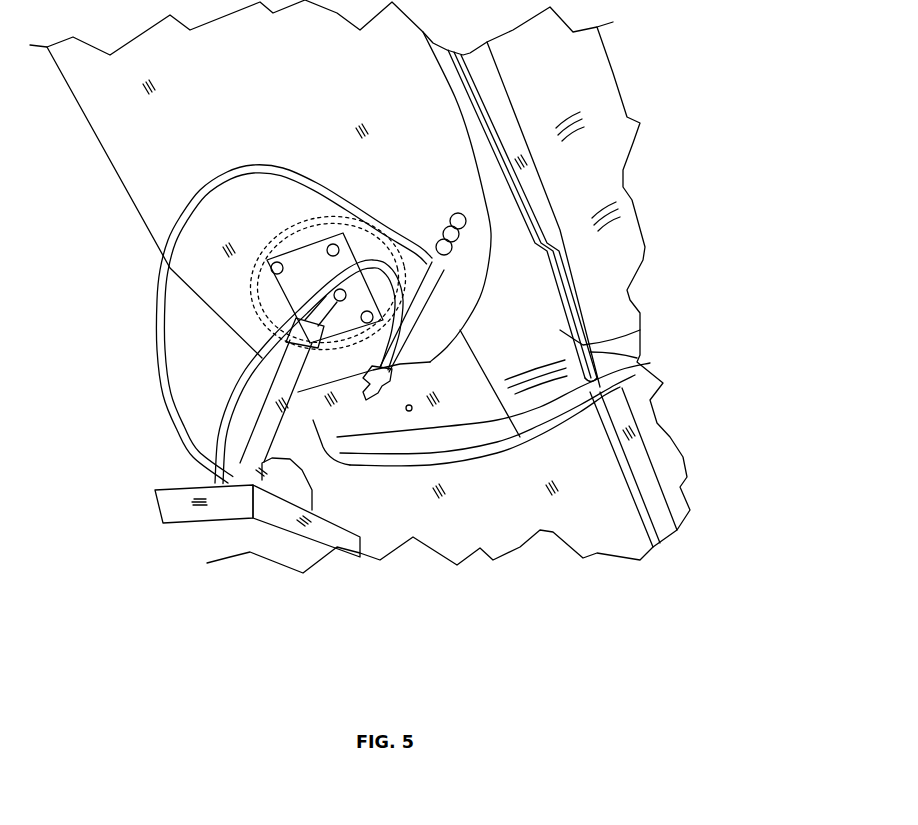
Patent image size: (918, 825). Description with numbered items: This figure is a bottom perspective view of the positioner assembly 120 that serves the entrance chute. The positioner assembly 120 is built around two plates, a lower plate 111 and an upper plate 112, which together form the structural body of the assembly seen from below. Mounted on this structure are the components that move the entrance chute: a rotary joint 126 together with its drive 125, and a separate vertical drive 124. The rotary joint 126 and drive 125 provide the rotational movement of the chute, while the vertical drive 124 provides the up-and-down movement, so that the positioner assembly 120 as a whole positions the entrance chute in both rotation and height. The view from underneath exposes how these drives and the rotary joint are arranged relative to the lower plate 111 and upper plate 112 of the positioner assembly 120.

The lower plate 111 is at (437, 147).
The upper plate 112 is at (450, 365).
The positioner assembly 120 is at (467, 233).
The vertical drive 124 is at (265, 430).
The drive 125 is at (400, 302).
The rotary joint 126 is at (253, 297).